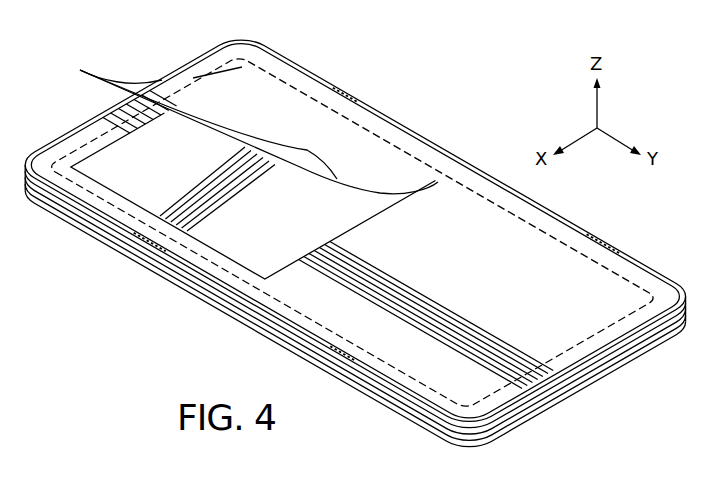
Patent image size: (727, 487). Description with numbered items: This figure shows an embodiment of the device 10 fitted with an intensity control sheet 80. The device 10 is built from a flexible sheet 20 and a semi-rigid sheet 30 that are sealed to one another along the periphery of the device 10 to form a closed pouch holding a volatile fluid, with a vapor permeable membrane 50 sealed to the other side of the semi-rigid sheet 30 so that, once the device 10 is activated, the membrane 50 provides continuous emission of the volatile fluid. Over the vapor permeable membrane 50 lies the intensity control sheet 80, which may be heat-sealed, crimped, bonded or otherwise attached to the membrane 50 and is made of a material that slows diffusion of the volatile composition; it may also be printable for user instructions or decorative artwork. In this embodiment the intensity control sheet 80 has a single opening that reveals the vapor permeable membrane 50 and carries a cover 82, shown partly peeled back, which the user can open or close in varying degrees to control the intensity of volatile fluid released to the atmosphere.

The device 10 is at (120, 311).
The flexible sheet 20 is at (407, 418).
The semi-rigid sheet 30 is at (548, 397).
The vapor permeable membrane 50 is at (114, 163).
The intensity control sheet 80 is at (477, 227).
The cover 82 is at (167, 100).